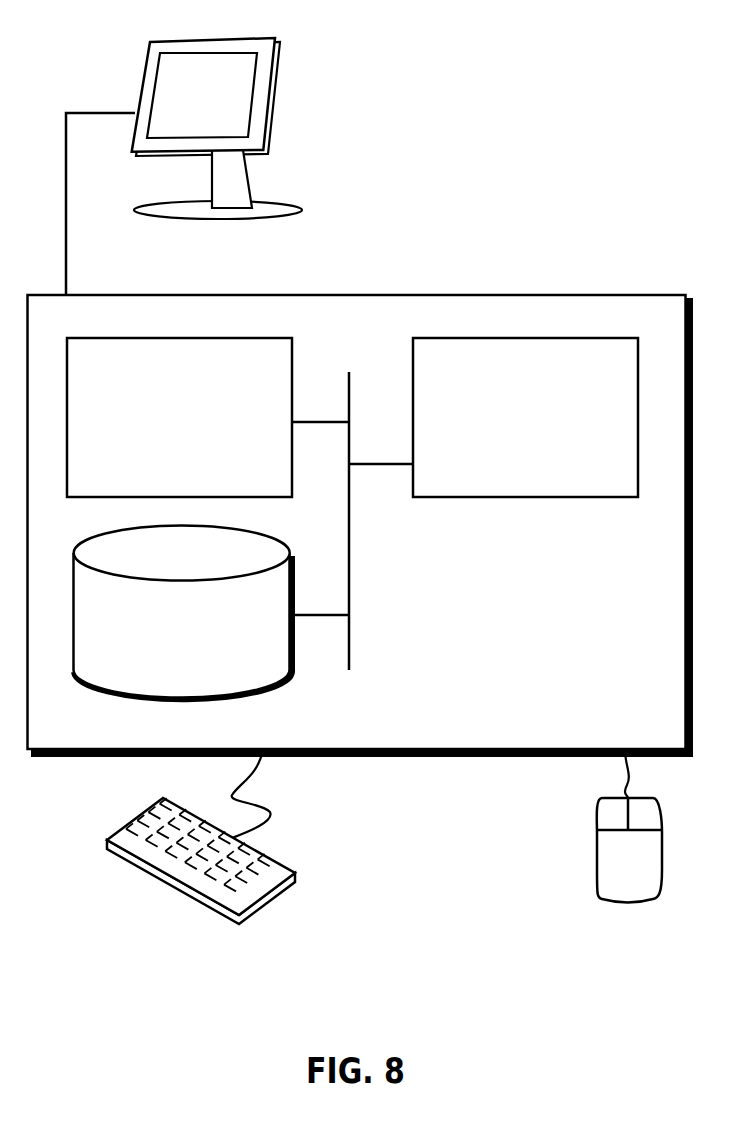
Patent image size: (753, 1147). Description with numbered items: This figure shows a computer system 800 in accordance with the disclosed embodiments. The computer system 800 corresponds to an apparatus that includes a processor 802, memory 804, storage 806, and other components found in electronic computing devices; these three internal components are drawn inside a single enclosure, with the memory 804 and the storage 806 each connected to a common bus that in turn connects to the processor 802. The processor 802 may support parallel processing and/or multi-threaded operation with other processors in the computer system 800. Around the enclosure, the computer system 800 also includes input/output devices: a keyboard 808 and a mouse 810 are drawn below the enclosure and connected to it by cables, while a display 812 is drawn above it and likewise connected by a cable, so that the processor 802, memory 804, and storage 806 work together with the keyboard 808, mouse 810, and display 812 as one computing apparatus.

The computer system 800 is at (403, 263).
The processor 802 is at (552, 427).
The memory 804 is at (202, 427).
The storage 806 is at (208, 641).
The keyboard 808 is at (125, 860).
The mouse 810 is at (648, 871).
The display 812 is at (184, 166).